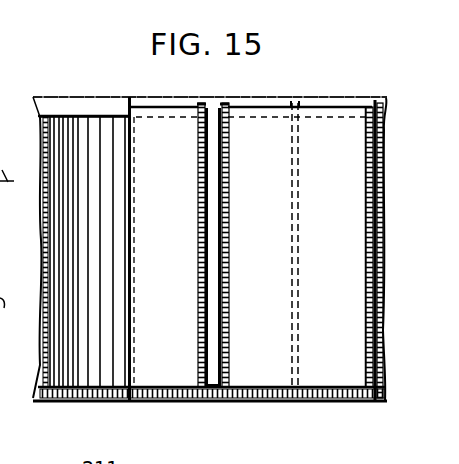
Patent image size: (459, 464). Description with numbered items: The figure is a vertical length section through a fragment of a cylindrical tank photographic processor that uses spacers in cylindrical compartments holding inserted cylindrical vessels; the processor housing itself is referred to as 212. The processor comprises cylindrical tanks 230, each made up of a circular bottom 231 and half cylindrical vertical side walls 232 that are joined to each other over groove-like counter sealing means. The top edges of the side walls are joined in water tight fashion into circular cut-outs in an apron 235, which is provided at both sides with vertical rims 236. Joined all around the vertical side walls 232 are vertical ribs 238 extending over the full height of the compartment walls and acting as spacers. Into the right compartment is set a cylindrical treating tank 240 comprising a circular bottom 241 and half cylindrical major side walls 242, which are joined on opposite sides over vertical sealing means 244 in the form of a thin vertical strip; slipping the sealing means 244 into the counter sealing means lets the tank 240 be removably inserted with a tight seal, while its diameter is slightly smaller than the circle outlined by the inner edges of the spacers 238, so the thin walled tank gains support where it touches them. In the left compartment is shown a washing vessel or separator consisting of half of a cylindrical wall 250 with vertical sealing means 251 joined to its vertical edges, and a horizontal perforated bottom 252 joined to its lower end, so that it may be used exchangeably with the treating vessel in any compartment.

The housing 212 is at (44, 453).
The cylindrical tank 230 is at (378, 342).
The circular bottom 231 is at (304, 406).
The half cylindrical vertical side wall 232 is at (377, 203).
The apron 235 is at (74, 116).
The vertical rim 236 is at (89, 107).
The vertical rib 238 is at (101, 134).
The cylindrical treating tank 240 is at (253, 367).
The circular bottom 241 is at (282, 403).
The half cylindrical major side wall 242 is at (374, 240).
The vertical sealing means 244 is at (300, 108).
The half cylindrical wall 250 is at (200, 368).
The vertical sealing means 251 is at (120, 380).
The horizontal bottom 252 is at (90, 403).